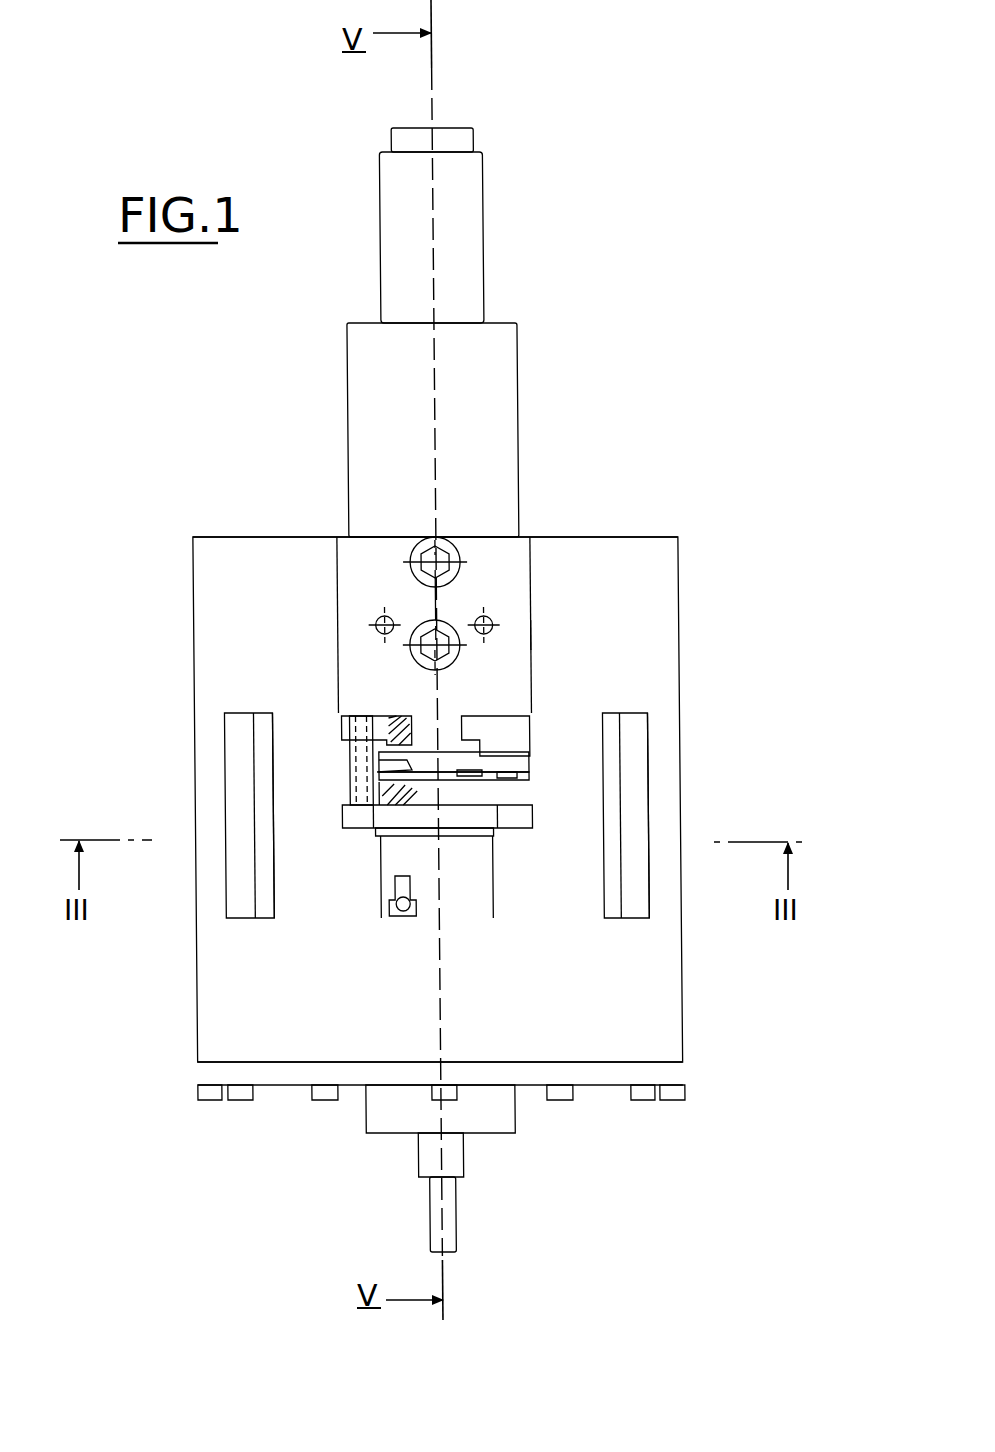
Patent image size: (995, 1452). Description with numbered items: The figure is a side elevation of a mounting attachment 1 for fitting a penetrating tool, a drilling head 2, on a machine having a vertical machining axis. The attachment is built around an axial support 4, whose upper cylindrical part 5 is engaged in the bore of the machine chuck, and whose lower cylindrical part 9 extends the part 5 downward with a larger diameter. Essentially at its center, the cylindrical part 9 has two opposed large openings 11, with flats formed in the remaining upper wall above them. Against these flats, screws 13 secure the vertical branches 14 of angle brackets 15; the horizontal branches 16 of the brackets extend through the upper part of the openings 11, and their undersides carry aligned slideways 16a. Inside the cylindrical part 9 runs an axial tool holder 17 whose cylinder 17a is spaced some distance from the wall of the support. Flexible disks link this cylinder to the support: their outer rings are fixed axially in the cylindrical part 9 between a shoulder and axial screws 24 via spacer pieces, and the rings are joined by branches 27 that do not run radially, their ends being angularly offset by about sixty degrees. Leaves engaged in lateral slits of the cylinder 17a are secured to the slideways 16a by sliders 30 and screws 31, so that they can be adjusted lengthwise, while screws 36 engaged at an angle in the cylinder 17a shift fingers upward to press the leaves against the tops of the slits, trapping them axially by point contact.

The mounting attachment 1 is at (633, 472).
The drilling head 2 is at (440, 1225).
The axial support 4 is at (239, 536).
The cylindrical part 5 is at (492, 384).
The cylindrical part 9 is at (642, 995).
The openings 11 is at (628, 870).
The screws 13 is at (412, 648).
The vertical branches 14 is at (510, 580).
The angle brackets 15 is at (527, 632).
The horizontal branches 16 is at (445, 728).
The slideways 16a is at (398, 718).
The axial tool holder 17 is at (368, 877).
The cylinder 17a is at (376, 1110).
The axial screws 24 is at (643, 1093).
The branches 27 is at (604, 790).
The sliders 30 is at (516, 745).
The screws 31 is at (356, 764).
The screws 36 is at (398, 887).